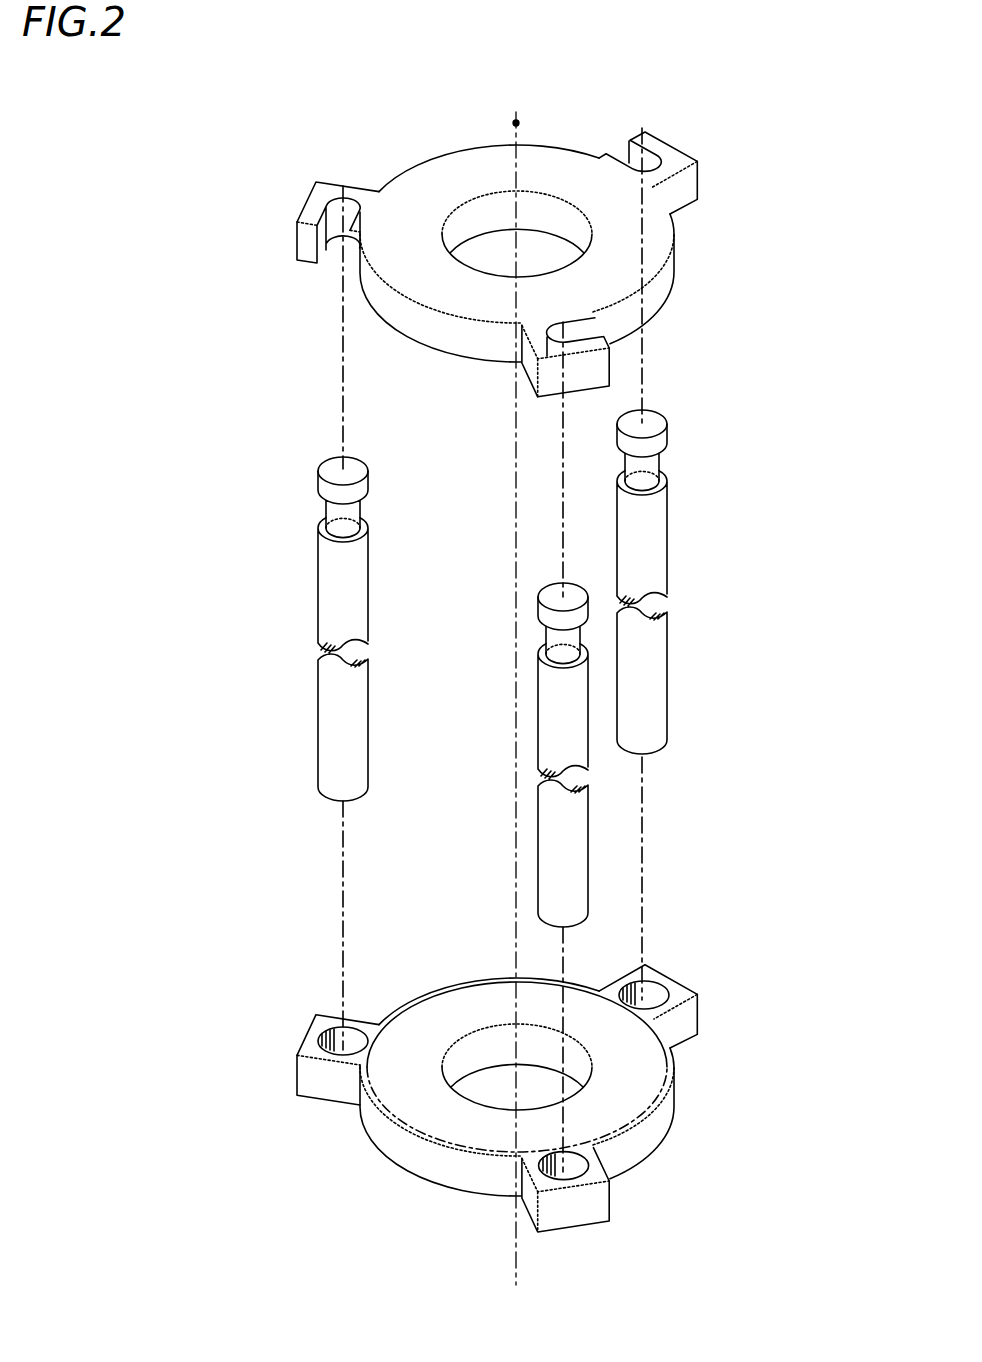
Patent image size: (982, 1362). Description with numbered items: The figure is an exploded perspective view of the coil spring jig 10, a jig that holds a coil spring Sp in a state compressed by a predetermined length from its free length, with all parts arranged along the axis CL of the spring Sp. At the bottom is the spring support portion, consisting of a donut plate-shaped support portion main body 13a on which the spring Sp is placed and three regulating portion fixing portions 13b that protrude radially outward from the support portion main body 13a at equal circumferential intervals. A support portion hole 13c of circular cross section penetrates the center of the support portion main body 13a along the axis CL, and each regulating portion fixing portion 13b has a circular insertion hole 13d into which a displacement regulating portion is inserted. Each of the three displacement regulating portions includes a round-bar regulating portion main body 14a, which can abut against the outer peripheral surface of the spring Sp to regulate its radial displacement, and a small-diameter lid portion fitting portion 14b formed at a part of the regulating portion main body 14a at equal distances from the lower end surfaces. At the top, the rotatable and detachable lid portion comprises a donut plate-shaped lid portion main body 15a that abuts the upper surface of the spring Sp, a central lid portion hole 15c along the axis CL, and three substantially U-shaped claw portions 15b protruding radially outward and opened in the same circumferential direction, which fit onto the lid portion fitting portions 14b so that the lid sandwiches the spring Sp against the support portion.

The coil spring jig 10 is at (204, 204).
The axis CL is at (520, 123).
The lid portion main body 15a is at (416, 194).
The claw portion 15b is at (306, 198).
The lid portion hole 15c is at (478, 214).
The regulating portion main body 14a is at (340, 592).
The lid portion fitting portion 14b is at (330, 494).
The support portion main body 13a is at (392, 1150).
The regulating portion fixing portion 13b is at (292, 1040).
The support portion hole 13c is at (490, 1106).
The insertion hole 13d is at (350, 1042).
The coil spring Sp is at (672, 1083).